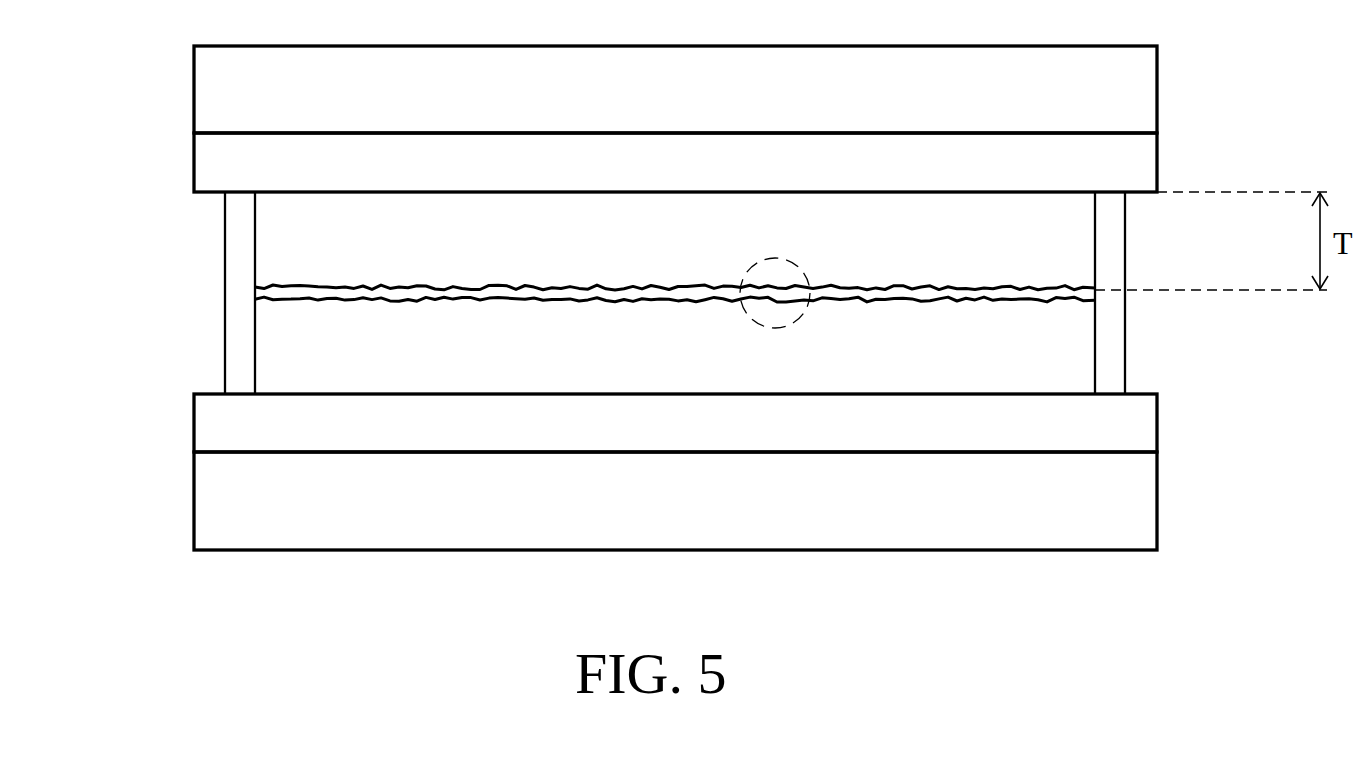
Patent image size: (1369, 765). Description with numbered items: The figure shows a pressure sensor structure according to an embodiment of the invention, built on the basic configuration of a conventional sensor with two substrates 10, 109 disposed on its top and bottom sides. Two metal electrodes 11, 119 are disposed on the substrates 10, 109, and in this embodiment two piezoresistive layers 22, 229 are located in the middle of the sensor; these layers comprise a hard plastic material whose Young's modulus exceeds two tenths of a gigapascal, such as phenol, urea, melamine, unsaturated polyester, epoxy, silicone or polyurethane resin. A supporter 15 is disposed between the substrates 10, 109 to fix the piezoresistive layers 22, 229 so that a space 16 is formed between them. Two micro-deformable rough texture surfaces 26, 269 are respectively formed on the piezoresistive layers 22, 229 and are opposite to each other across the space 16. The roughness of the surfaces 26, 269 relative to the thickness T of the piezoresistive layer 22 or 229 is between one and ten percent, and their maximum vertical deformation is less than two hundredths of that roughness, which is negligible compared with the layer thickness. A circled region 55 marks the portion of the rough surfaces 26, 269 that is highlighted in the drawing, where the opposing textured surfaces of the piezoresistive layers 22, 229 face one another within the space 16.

The substrate 10 is at (205, 92).
The metal electrode 11 is at (205, 165).
The supporter 15 is at (235, 212).
The piezoresistive layer 22 is at (275, 248).
The space 16 is at (670, 296).
The piezoresistive layer 229 is at (275, 350).
The metal electrode 119 is at (205, 427).
The substrate 109 is at (205, 502).
The micro-deformable rough texture surface 26 is at (1013, 293).
The micro-deformable rough texture surface 269 is at (1013, 297).
The enlarged detail region 55 is at (790, 325).